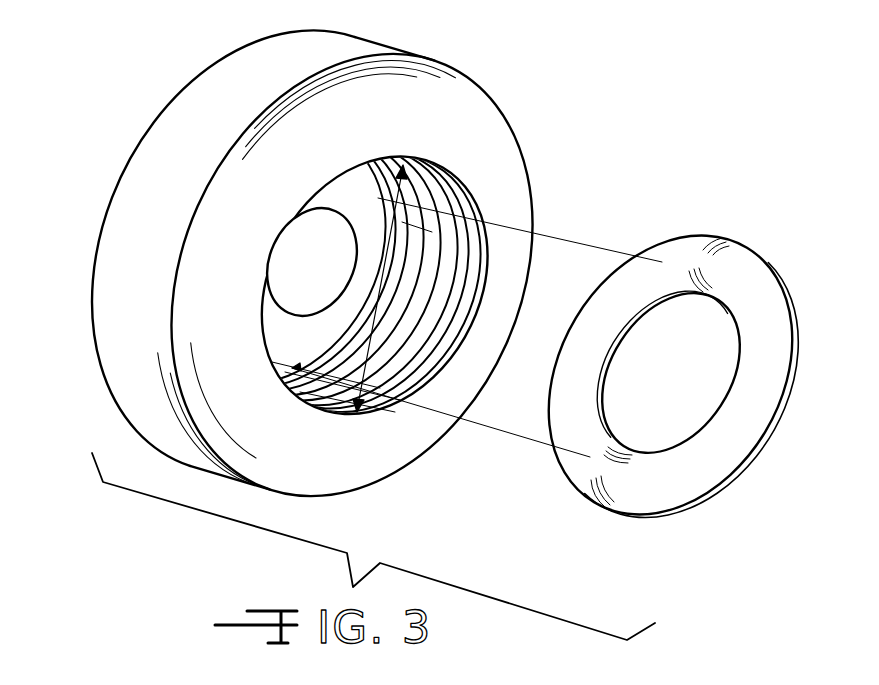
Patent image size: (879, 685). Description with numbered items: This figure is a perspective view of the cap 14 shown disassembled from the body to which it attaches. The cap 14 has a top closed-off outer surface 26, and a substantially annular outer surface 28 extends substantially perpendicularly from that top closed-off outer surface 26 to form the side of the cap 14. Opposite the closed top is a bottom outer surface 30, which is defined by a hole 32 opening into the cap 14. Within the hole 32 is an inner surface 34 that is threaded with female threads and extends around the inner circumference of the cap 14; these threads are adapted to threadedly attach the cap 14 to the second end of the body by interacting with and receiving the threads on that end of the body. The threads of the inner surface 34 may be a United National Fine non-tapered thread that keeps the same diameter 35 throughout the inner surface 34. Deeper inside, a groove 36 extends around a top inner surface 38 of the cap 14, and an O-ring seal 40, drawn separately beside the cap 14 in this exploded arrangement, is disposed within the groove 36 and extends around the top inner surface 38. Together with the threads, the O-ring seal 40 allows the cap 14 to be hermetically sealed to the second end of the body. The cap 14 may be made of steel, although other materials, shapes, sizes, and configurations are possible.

The cap 14 is at (496, 68).
The top closed-off outer surface 26 is at (146, 132).
The substantially annular outer surface 28 is at (158, 411).
The bottom outer surface 30 is at (348, 447).
The hole 32 is at (456, 274).
The inner surface 34 is at (378, 187).
The diameter 35 is at (378, 263).
The groove 36 is at (372, 232).
The top inner surface 38 is at (338, 279).
The O-ring seal 40 is at (734, 268).